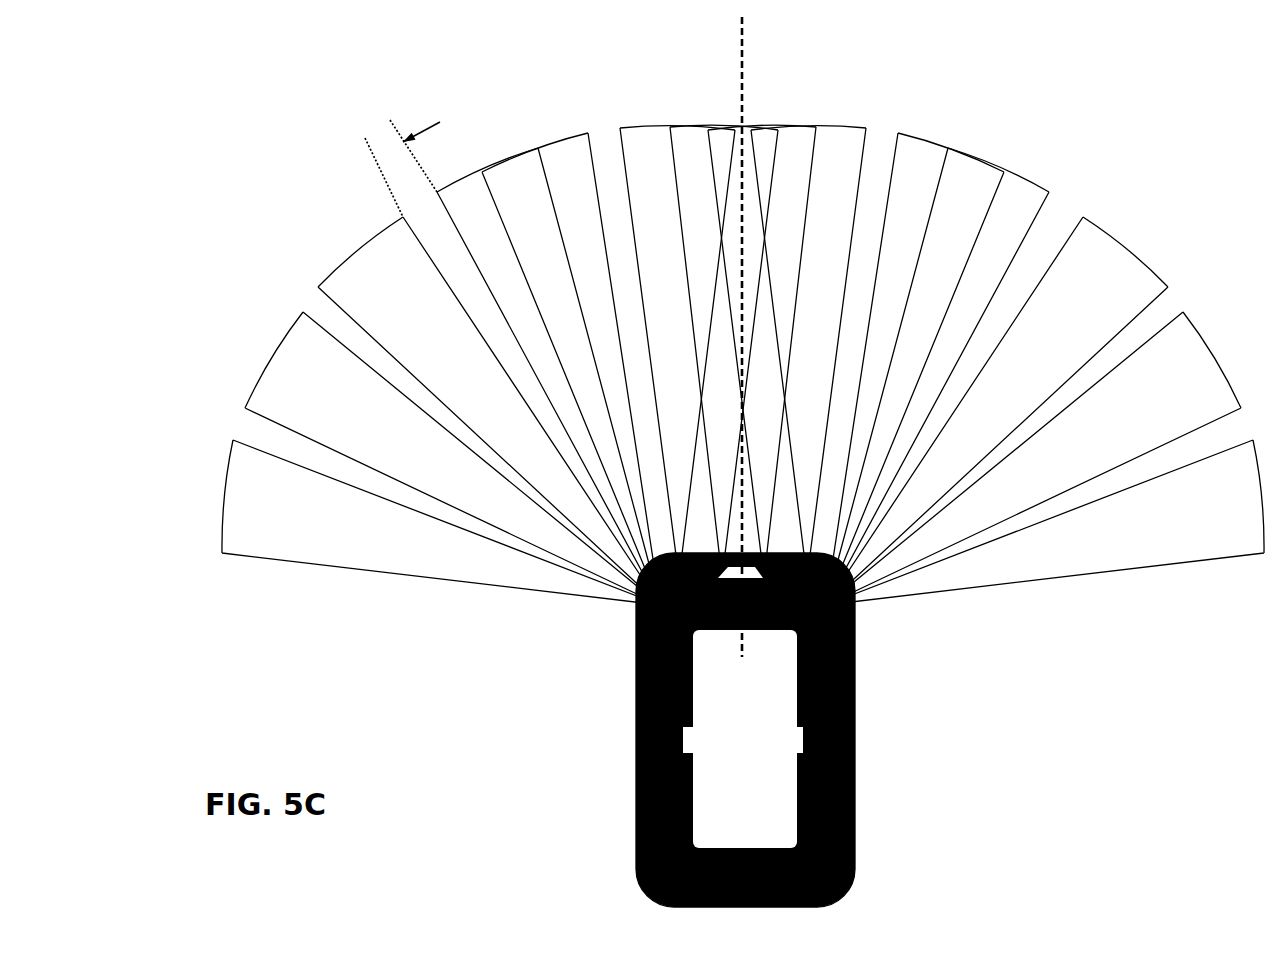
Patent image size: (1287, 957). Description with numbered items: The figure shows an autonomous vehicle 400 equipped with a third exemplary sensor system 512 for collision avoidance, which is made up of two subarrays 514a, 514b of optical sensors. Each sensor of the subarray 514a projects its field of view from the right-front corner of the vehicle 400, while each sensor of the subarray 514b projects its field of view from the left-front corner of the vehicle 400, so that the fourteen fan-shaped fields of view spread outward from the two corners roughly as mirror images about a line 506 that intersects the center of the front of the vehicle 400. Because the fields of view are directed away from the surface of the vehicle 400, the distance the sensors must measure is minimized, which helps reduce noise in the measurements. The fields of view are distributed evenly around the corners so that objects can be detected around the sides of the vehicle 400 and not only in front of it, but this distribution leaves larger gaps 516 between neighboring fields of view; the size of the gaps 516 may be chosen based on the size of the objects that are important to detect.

The autonomous vehicle 400 is at (763, 744).
The line intersecting the center of the front of the vehicle 506 is at (742, 43).
The third exemplary sensor system 512 is at (1200, 130).
The first subarray of optical sensors 514a is at (892, 625).
The second subarray of optical sensors 514b is at (598, 625).
The gaps between fields of view 516 is at (373, 157).